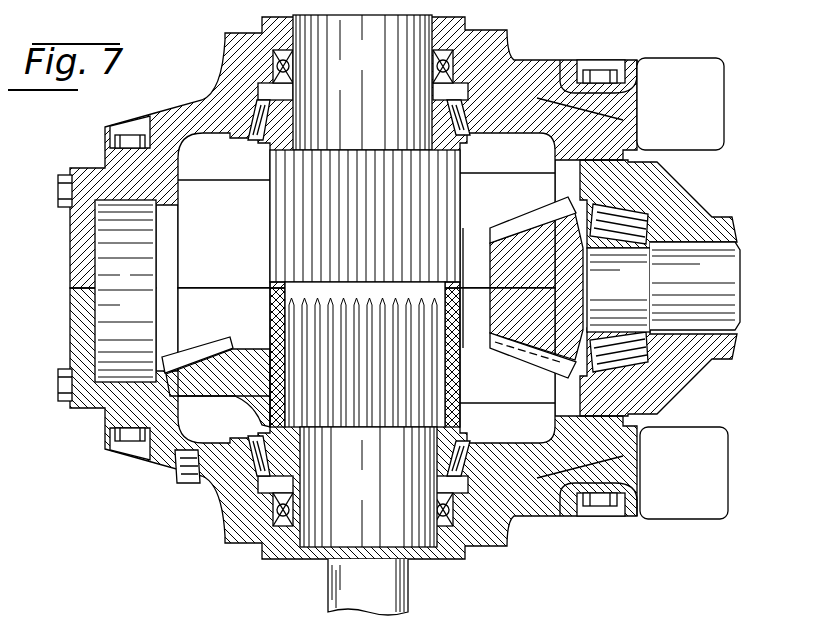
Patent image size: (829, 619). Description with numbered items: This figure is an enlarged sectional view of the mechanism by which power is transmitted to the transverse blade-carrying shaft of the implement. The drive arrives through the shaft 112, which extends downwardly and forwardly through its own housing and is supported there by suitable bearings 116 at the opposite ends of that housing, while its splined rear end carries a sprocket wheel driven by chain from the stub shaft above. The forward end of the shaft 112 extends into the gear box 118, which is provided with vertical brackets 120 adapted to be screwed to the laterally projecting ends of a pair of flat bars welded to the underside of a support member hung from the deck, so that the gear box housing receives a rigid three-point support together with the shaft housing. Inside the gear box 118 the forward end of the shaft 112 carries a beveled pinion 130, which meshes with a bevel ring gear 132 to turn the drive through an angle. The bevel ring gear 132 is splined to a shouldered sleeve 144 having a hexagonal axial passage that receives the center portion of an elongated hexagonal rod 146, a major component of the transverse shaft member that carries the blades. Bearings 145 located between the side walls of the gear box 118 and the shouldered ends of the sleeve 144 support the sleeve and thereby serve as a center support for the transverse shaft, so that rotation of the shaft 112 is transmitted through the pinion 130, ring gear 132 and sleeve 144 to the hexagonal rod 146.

The shaft 112 is at (725, 282).
The bearings 116 is at (625, 240).
The gear box 118 is at (510, 535).
The vertical brackets 120 is at (697, 505).
The beveled pinion 130 is at (530, 227).
The bevel ring gear 132 is at (195, 348).
The shouldered sleeve 144 is at (290, 333).
The bearings 145 is at (265, 143).
The elongated hexagonal rod 146 is at (410, 585).